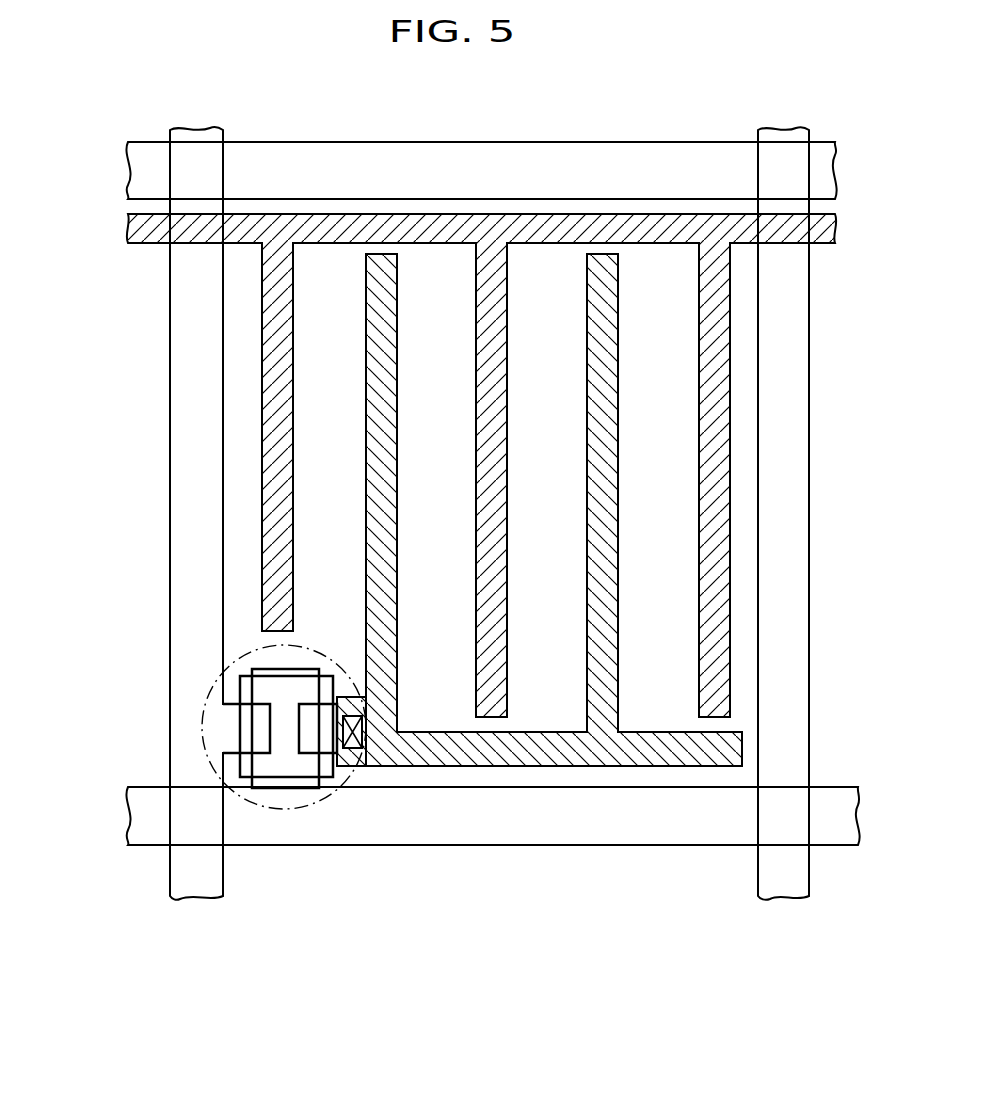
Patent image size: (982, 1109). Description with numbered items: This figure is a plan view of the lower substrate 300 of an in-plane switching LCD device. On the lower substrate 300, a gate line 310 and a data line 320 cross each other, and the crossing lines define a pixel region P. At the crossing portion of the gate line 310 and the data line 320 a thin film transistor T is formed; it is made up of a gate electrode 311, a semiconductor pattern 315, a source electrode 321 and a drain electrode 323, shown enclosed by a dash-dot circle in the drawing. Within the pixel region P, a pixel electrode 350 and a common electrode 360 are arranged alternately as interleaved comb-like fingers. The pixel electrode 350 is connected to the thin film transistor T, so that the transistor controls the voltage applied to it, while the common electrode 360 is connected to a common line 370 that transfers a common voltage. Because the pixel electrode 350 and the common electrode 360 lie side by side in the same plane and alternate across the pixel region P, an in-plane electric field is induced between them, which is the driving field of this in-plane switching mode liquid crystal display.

The lower substrate 300 is at (69, 198).
The gate line 310 is at (657, 832).
The gate electrode 311 is at (296, 668).
The semiconductor pattern 315 is at (312, 675).
The data line 320 is at (183, 373).
The source electrode 321 is at (225, 728).
The drain electrode 323 is at (312, 735).
The pixel electrode 350 is at (610, 480).
The common electrode 360 is at (277, 284).
The common line 370 is at (637, 214).
The pixel region P is at (740, 323).
The thin film transistor T is at (284, 810).